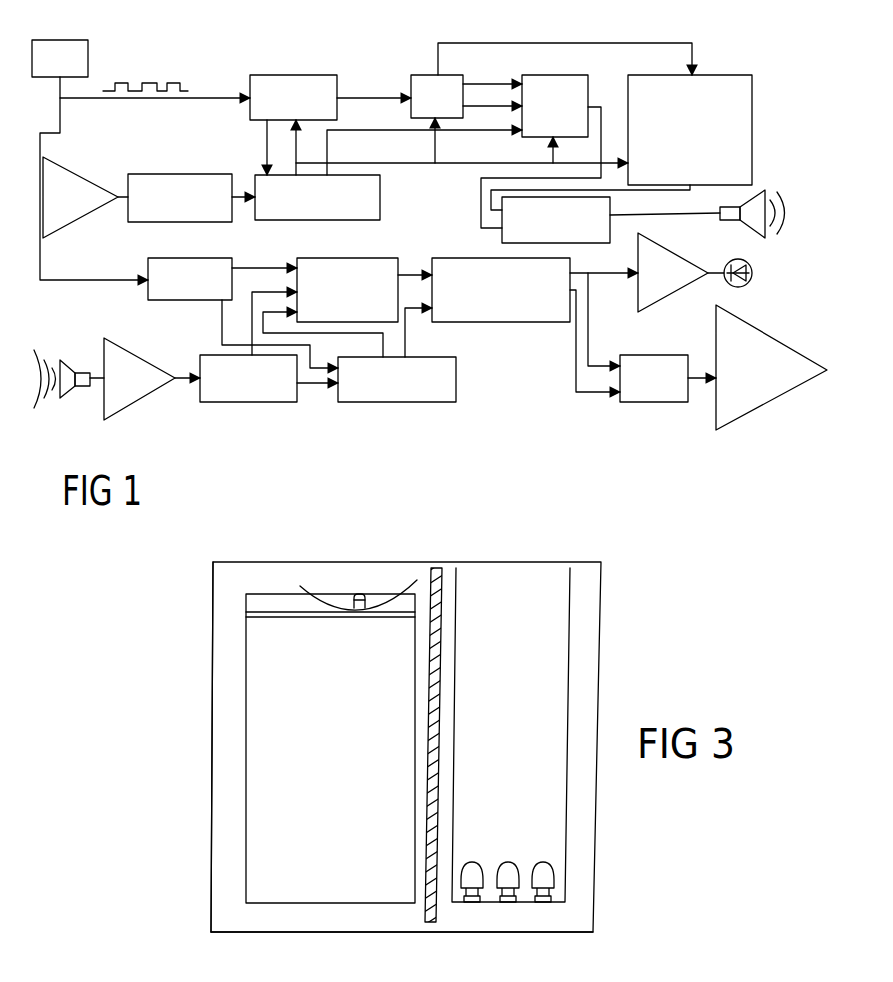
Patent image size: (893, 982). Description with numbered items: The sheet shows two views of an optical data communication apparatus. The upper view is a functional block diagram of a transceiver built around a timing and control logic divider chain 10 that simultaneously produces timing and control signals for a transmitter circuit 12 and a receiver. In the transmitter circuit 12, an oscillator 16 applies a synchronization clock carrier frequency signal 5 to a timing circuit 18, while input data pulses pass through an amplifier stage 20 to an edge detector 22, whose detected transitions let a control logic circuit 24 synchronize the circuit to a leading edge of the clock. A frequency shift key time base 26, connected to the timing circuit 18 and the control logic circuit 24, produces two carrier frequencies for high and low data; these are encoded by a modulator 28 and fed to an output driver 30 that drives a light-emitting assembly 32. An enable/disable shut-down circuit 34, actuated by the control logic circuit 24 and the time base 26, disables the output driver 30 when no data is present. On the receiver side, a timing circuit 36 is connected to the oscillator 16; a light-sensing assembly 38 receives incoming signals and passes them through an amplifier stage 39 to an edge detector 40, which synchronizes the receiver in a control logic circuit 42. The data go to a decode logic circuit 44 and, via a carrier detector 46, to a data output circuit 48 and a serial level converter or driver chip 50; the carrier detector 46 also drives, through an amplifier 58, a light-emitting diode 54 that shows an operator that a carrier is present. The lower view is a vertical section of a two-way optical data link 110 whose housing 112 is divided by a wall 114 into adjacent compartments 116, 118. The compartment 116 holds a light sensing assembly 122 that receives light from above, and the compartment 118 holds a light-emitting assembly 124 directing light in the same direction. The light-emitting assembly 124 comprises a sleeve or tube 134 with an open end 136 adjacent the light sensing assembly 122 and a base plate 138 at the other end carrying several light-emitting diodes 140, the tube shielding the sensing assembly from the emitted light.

In FIG. 1, the synchronization clock carrier frequency signal 5 is at (157, 82).
In FIG. 1, the timing and control logic divider chain 10 is at (25, 267).
In FIG. 1, the transmitter circuit 12 is at (383, 78).
In FIG. 1, the oscillator 16 is at (90, 53).
In FIG. 1, the timing circuit 18 is at (335, 72).
In FIG. 1, the amplifier stage 20 is at (85, 178).
In FIG. 1, the edge detector 22 is at (180, 172).
In FIG. 1, the control logic circuit 24 is at (380, 207).
In FIG. 1, the frequency shift key time base 26 is at (455, 72).
In FIG. 1, the modulator 28 is at (573, 73).
In FIG. 1, the output driver 30 is at (563, 245).
In FIG. 1, the light-emitting assembly 32 is at (762, 192).
In FIG. 1, the enable/disable shut-down circuit 34 is at (735, 73).
In FIG. 1, the timing circuit 36 is at (196, 300).
In FIG. 1, the light-sensing assembly 38 is at (68, 396).
In FIG. 1, the amplifier stage 39 is at (105, 402).
In FIG. 1, the edge detector 40 is at (225, 403).
In FIG. 1, the control logic circuit 42 is at (412, 403).
In FIG. 1, the decode logic circuit 44 is at (385, 250).
In FIG. 1, the carrier detector 46 is at (495, 325).
In FIG. 1, the data output circuit 48 is at (660, 403).
In FIG. 1, the RS 232 level converter or driver chip 50 is at (778, 400).
In FIG. 1, the light-emitting diode 54 is at (731, 288).
In FIG. 1, the amplifier 58 is at (702, 250).
In FIG. 3, the two-way optical data link 110 is at (200, 638).
In FIG. 3, the housing 112 is at (211, 812).
In FIG. 3, the wall 114 is at (437, 568).
In FIG. 3, the compartment 116 is at (247, 922).
In FIG. 3, the compartment 118 is at (512, 920).
In FIG. 3, the light sensing assembly 122 is at (322, 597).
In FIG. 3, the light-emitting assembly 124 is at (573, 672).
In FIG. 3, the sleeve or tube 134 is at (568, 772).
In FIG. 3, the open end 136 is at (573, 572).
In FIG. 3, the base plate 138 is at (533, 902).
In FIG. 3, the light-emitting diodes 140 is at (541, 858).